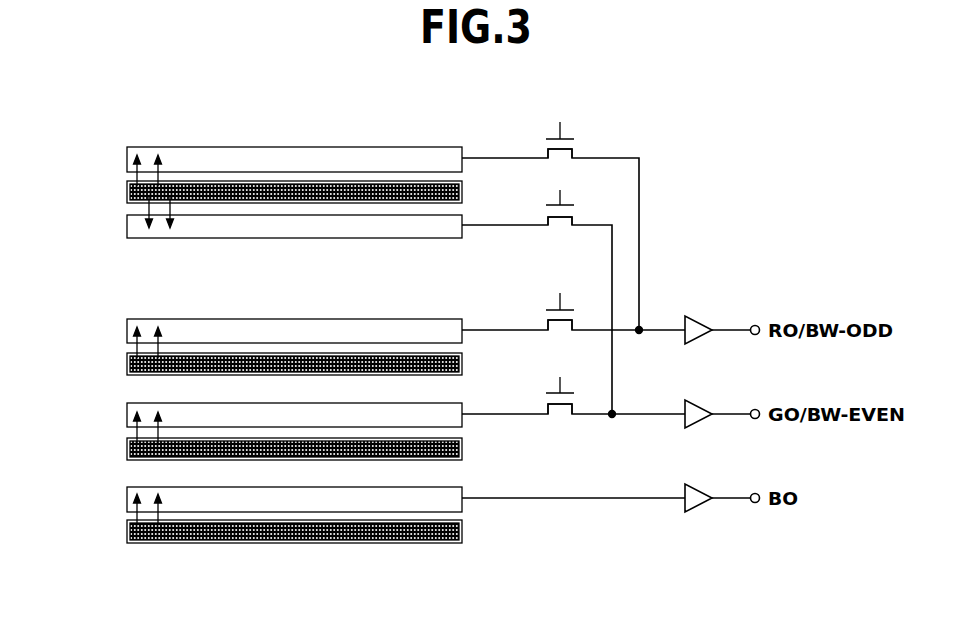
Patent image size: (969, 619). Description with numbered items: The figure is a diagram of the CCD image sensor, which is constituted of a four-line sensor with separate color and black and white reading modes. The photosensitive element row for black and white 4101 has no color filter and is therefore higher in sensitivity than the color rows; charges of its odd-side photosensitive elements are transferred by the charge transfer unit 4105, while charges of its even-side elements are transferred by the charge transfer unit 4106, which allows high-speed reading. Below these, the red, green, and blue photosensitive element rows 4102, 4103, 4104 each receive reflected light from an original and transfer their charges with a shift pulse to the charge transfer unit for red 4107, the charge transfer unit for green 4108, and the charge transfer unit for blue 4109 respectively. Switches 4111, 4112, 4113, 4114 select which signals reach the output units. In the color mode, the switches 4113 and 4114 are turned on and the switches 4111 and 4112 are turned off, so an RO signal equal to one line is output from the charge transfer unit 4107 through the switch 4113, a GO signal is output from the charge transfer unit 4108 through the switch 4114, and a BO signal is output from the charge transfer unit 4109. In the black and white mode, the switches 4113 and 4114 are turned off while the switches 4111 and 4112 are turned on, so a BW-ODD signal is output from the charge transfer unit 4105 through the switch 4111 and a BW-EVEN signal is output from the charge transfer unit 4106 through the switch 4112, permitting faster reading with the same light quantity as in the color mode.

The photosensitive element row for black and white 4101 is at (127, 191).
The red photosensitive element row 4102 is at (127, 363).
The green photosensitive element row 4103 is at (127, 447).
The blue photosensitive element row 4104 is at (127, 531).
The charge transfer unit 4105 is at (127, 158).
The charge transfer unit 4106 is at (127, 226).
The charge transfer unit for red 4107 is at (127, 330).
The charge transfer unit for green 4108 is at (127, 414).
The charge transfer unit for blue 4109 is at (127, 498).
The switch 4111 is at (561, 128).
The switch 4112 is at (561, 196).
The switch 4113 is at (561, 301).
The switch 4114 is at (561, 384).